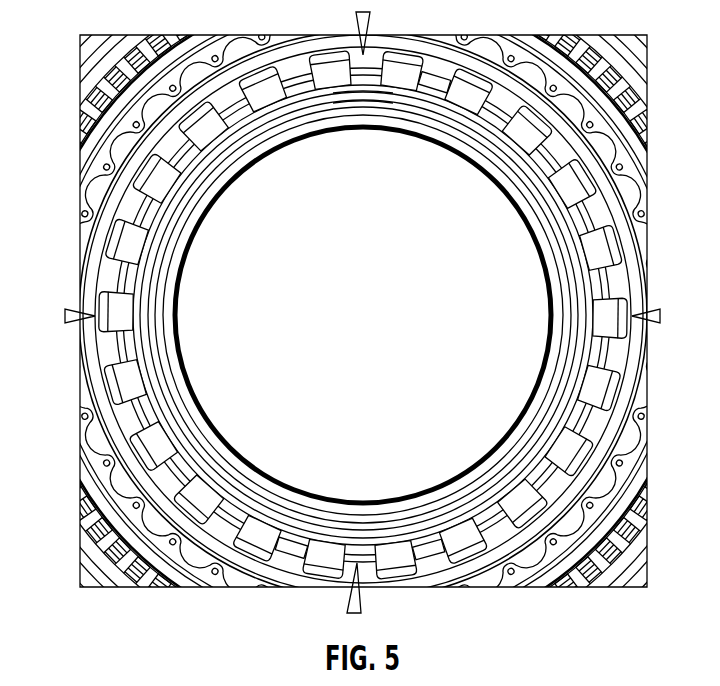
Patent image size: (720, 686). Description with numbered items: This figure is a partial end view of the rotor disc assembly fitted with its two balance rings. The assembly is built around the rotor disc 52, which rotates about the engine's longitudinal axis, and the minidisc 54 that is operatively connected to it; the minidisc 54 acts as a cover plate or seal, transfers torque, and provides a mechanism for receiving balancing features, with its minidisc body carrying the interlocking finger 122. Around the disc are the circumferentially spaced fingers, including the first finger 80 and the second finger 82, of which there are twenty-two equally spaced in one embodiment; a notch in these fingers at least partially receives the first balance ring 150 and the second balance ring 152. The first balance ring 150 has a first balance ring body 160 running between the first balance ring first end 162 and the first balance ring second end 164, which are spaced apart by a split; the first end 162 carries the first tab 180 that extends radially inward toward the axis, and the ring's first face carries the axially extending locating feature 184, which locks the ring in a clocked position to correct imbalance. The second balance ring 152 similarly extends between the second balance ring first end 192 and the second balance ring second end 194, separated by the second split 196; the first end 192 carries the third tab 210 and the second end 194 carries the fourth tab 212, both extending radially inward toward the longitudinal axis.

The rotor disc 52 is at (238, 185).
The minidisc 54 is at (626, 58).
The first finger 80 is at (152, 182).
The second finger 82 is at (128, 245).
The interlocking finger 122 is at (130, 210).
The first balance ring 150 is at (367, 547).
The second balance ring 152 is at (362, 82).
The first balance ring body 160 is at (362, 110).
The first balance ring first end 162 is at (407, 113).
The first balance ring second end 164 is at (316, 100).
The first tab 180 is at (417, 115).
The locating feature 184 is at (350, 585).
The second balance ring first end 192 is at (397, 512).
The second balance ring second end 194 is at (322, 508).
The second split 196 is at (372, 528).
The third tab 210 is at (432, 510).
The fourth tab 212 is at (290, 513).